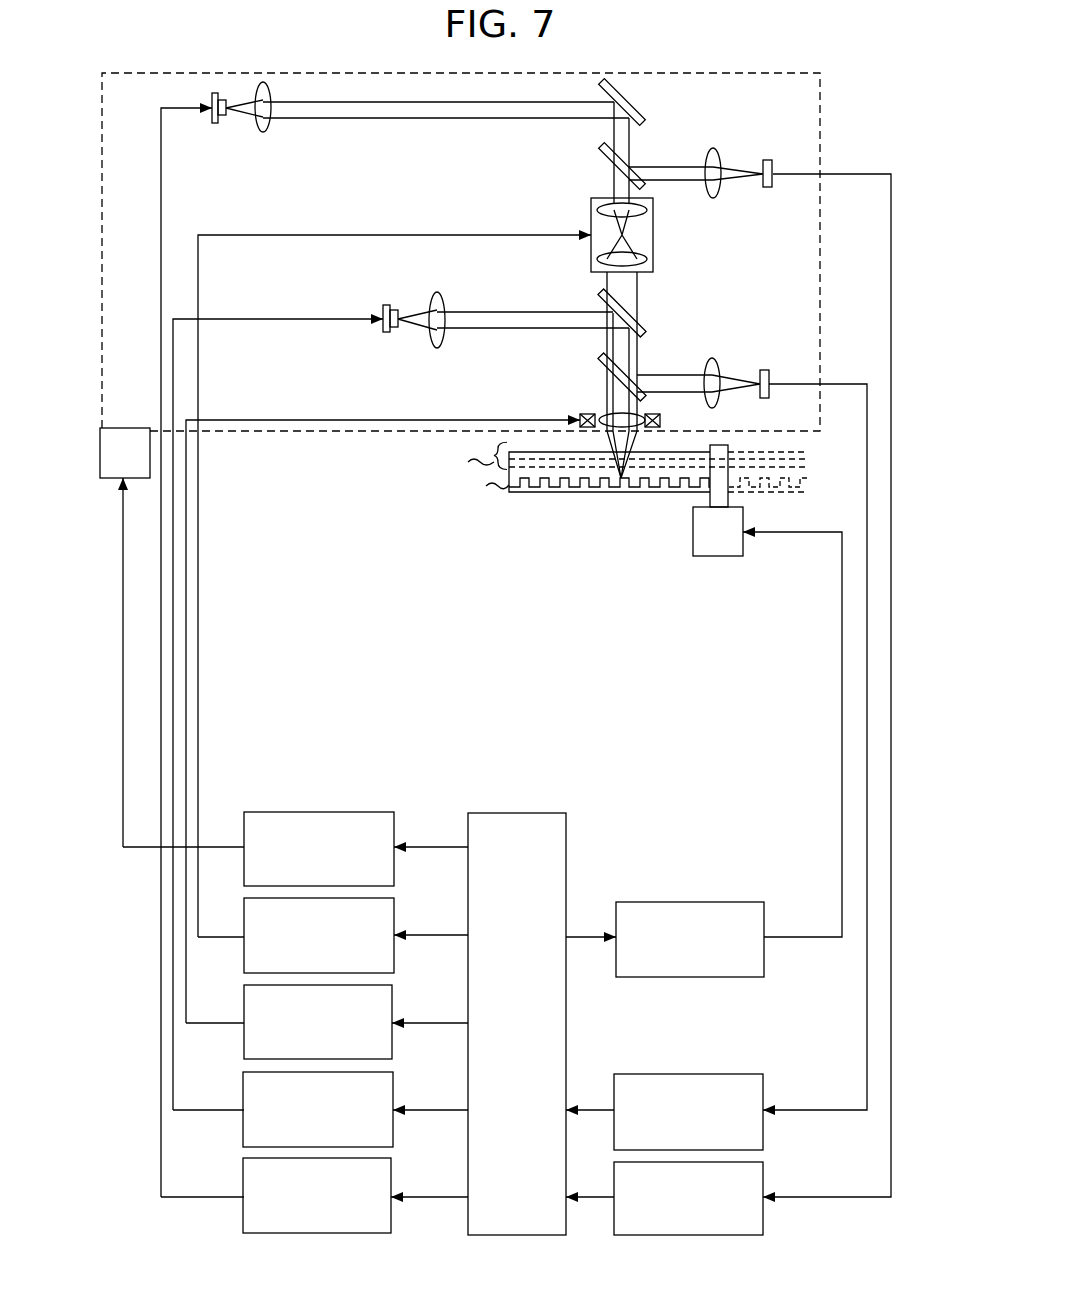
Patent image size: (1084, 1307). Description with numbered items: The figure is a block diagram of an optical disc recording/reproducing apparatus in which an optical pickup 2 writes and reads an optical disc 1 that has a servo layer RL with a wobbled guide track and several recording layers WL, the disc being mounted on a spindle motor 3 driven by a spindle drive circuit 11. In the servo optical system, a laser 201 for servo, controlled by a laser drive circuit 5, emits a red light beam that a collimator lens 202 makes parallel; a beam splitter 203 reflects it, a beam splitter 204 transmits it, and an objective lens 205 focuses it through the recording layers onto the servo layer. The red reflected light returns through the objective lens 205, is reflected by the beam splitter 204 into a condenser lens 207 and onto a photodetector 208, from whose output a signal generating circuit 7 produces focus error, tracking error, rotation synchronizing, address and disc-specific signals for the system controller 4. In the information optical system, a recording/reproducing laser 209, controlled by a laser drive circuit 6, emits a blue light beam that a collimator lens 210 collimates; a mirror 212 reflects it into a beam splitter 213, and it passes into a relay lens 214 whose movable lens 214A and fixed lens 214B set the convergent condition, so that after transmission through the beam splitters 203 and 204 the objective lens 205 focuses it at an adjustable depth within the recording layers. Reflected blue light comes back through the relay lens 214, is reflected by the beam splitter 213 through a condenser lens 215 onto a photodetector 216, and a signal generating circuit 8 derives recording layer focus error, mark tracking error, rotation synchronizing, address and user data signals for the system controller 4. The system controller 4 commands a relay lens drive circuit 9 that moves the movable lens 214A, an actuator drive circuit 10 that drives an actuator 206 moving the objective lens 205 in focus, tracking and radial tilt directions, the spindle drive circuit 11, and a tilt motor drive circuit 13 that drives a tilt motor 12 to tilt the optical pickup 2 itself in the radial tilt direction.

The optical disc 1 is at (593, 492).
The optical pickup 2 is at (345, 432).
The spindle motor 3 is at (718, 556).
The system controller 4 is at (567, 834).
The laser drive circuit 5 is at (395, 1089).
The laser drive circuit 6 is at (393, 1176).
The signal generating circuit 7 is at (765, 1090).
The signal generating circuit 8 is at (765, 1178).
The relay lens drive circuit 9 is at (396, 915).
The actuator drive circuit 10 is at (394, 1002).
The spindle drive circuit 11 is at (766, 918).
The tilt motor 12 is at (140, 478).
The tilt motor drive circuit 13 is at (396, 828).
The laser for servo 201 is at (387, 332).
The collimator lens 202 is at (437, 348).
The beam splitter 203 is at (596, 293).
The beam splitter 204 is at (596, 357).
The objective lens 205 is at (595, 414).
The actuator 206 is at (662, 421).
The condenser lens 207 is at (712, 358).
The photodetector 208 is at (767, 370).
The recording/reproducing laser 209 is at (215, 123).
The collimator lens 210 is at (263, 132).
The mirror 212 is at (624, 90).
The beam splitter 213 is at (596, 156).
The relay lens 214 is at (618, 233).
The movable lens 214A is at (597, 210).
The fixed lens 214B is at (597, 260).
The condenser lens 215 is at (718, 150).
The photodetector 216 is at (768, 187).